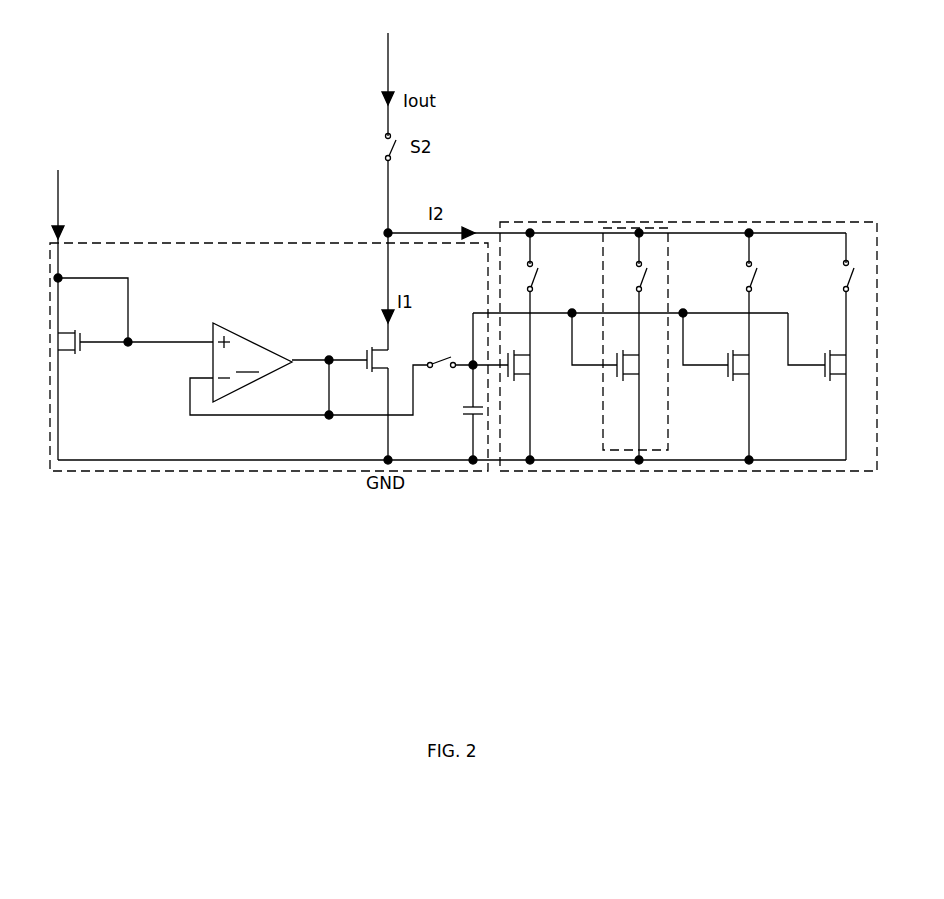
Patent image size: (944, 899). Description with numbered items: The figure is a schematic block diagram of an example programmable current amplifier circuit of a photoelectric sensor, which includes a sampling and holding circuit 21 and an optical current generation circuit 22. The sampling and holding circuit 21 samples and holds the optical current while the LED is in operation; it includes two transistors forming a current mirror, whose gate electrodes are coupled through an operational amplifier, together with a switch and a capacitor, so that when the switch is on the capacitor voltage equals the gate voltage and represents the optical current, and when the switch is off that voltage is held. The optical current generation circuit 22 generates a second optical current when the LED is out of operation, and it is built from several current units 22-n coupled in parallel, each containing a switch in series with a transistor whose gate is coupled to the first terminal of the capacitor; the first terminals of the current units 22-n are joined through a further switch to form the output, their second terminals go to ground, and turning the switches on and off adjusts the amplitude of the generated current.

The sampling and holding circuit 21 is at (215, 471).
The optical current generation circuit 22 is at (623, 471).
The current unit 22-n is at (668, 408).